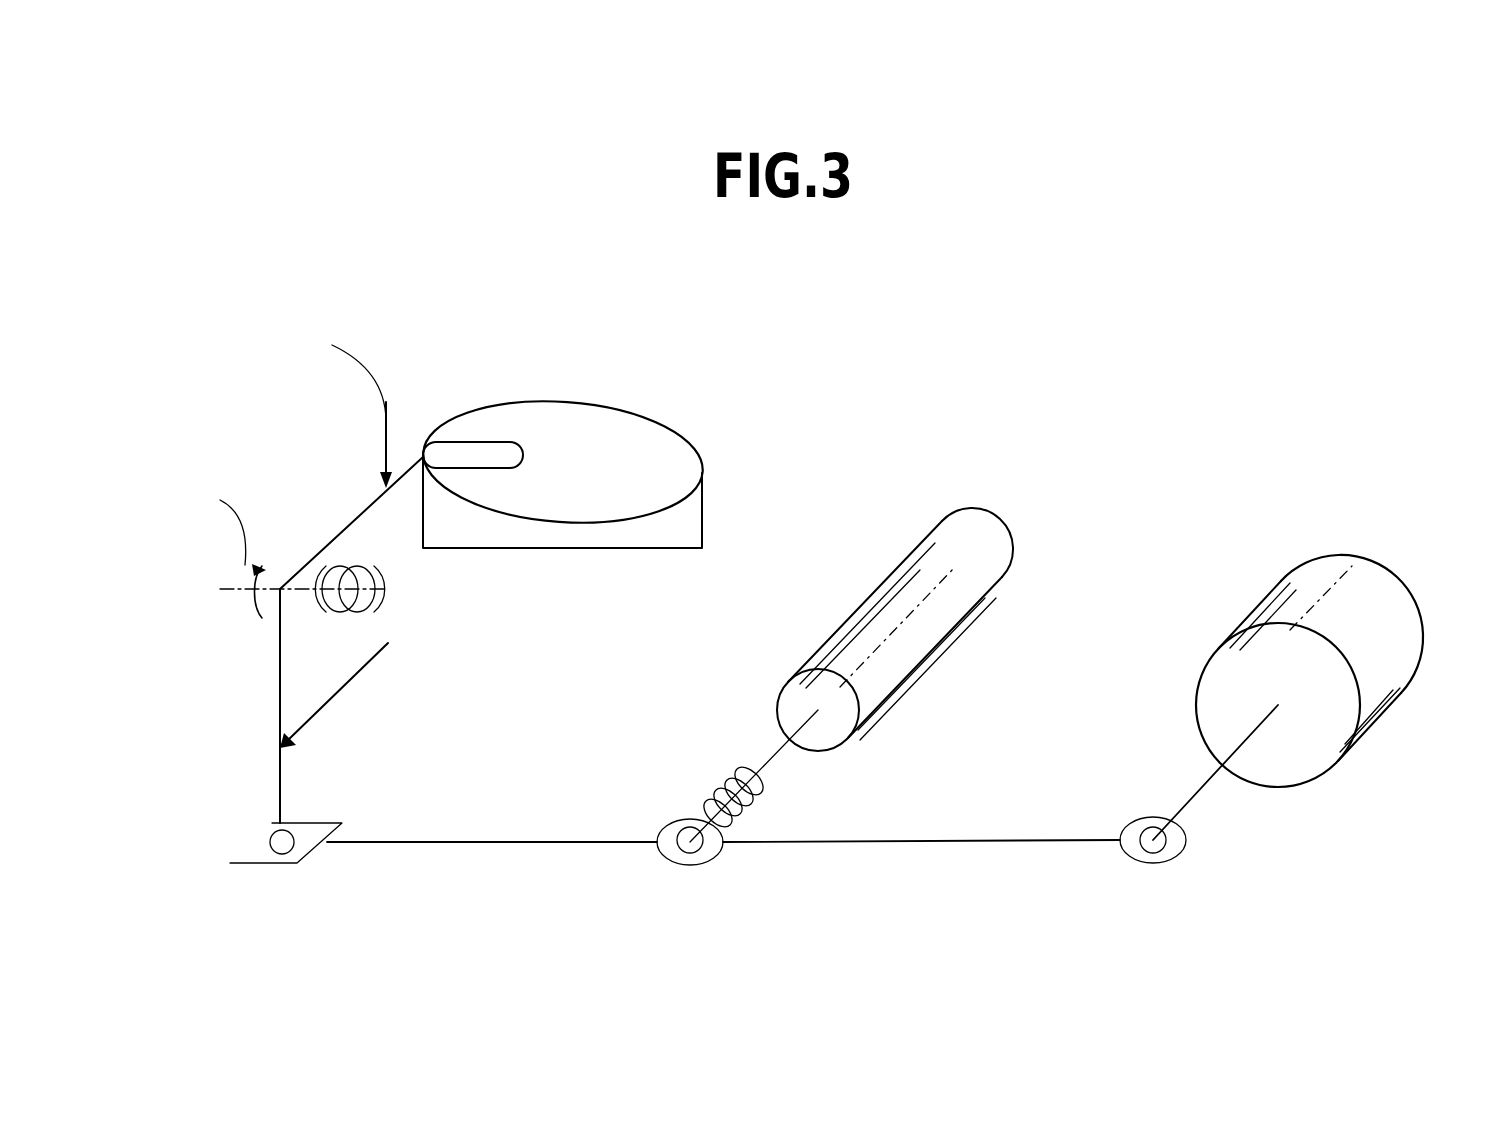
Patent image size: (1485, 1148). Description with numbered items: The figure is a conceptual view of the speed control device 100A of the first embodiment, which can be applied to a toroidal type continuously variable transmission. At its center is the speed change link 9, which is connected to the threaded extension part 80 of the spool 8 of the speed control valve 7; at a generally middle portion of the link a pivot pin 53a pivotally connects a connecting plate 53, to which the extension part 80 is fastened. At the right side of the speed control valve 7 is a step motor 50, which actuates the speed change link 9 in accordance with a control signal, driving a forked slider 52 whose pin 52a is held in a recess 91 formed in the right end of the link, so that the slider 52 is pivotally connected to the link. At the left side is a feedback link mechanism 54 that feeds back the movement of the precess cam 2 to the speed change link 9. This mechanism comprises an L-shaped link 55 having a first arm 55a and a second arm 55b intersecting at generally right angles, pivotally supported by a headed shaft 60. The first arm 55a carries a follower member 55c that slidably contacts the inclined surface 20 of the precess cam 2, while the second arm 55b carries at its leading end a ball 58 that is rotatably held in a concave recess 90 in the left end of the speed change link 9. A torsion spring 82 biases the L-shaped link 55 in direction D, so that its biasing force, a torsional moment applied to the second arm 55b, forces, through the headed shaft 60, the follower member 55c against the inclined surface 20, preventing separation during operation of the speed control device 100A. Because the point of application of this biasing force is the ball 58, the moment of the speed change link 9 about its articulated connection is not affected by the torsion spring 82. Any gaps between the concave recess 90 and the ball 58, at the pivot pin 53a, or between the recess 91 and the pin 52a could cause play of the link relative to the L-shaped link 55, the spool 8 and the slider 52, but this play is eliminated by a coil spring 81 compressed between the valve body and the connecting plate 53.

The speed control device 100A is at (958, 291).
The precess cam 2 is at (577, 428).
The inclined surface 20 is at (545, 402).
The follower member 55c is at (465, 455).
The speed control valve 7 is at (895, 580).
The spool 8 is at (867, 657).
The feedback link mechanism 54 is at (250, 525).
The headed shaft 60 is at (222, 589).
The L-shaped link 55 is at (290, 640).
The first arm 55a is at (328, 543).
The second arm 55b is at (280, 678).
The torsion spring 82 is at (385, 590).
The ball 58 is at (275, 838).
The concave recess 90 is at (255, 811).
The coil spring 81 is at (740, 760).
The extension part 80 is at (765, 765).
The connecting plate 53 is at (674, 835).
The pivot pin 53a is at (683, 835).
The speed change link 9 is at (940, 842).
The pin 52a is at (1143, 828).
The recess 91 is at (1157, 821).
The forked slider 52 is at (1197, 795).
The step motor 50 is at (1390, 677).